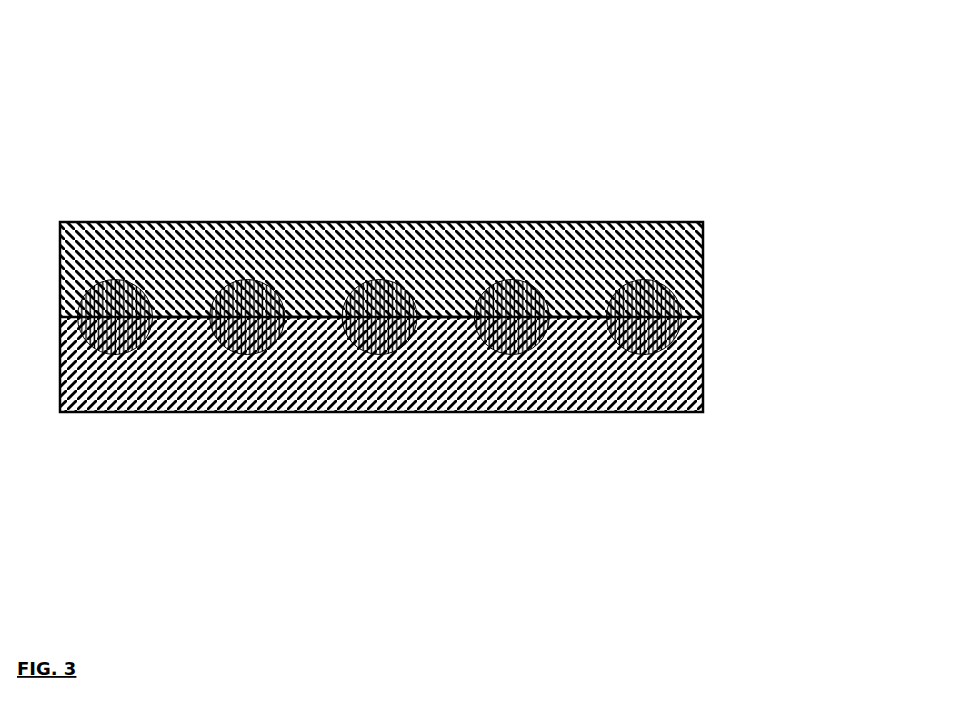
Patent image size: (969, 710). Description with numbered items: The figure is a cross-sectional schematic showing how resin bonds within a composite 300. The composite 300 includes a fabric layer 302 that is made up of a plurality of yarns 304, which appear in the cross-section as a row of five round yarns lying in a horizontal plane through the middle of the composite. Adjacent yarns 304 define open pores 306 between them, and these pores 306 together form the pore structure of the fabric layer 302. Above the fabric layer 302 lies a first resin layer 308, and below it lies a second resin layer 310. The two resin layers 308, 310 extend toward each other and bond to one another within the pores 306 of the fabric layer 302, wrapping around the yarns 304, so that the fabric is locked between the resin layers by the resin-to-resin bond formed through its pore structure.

The composite 300 is at (485, 319).
The fabric layer 302 is at (687, 300).
The yarns 304 is at (137, 323).
The open pores 306 is at (186, 310).
The first resin layer 308 is at (685, 248).
The second resin layer 310 is at (690, 400).